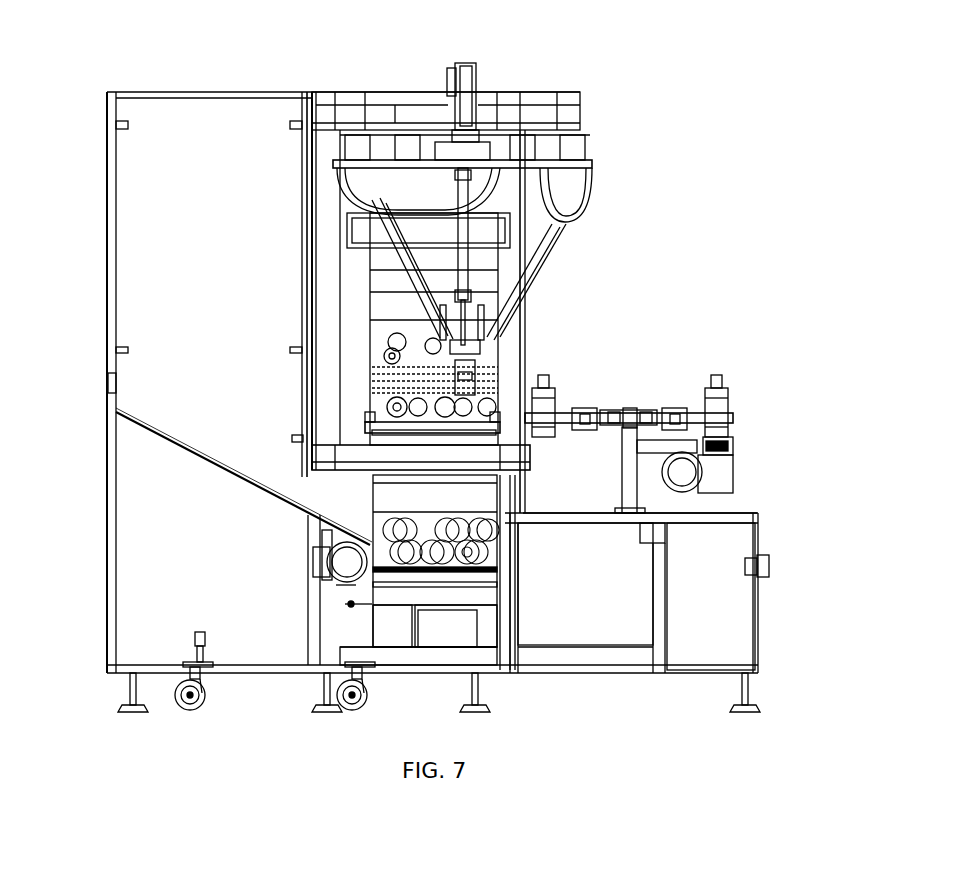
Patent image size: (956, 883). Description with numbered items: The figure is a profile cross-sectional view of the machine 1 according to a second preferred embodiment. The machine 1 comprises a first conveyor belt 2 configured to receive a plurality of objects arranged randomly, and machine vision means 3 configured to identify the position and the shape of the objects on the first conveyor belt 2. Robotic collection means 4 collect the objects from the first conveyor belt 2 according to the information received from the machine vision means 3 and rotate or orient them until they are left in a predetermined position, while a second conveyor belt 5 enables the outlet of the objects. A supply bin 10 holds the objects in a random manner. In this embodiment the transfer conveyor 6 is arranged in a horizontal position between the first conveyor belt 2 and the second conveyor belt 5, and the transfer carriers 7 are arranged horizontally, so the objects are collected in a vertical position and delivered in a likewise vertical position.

The machine 1 is at (118, 74).
The first conveyor belt 2 is at (512, 405).
The machine vision means 3 is at (493, 209).
The robotic collection means 4 is at (472, 279).
The second conveyor belt 5 is at (722, 437).
The transfer conveyor 6 is at (630, 410).
The transfer carriers 7 is at (566, 410).
The supply bin 10 is at (168, 437).